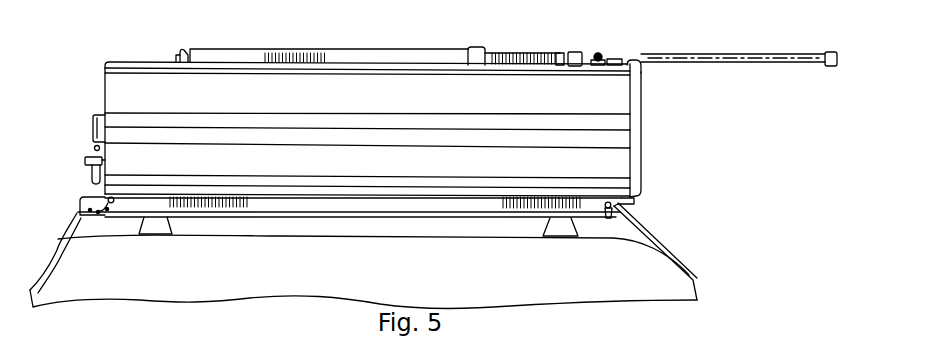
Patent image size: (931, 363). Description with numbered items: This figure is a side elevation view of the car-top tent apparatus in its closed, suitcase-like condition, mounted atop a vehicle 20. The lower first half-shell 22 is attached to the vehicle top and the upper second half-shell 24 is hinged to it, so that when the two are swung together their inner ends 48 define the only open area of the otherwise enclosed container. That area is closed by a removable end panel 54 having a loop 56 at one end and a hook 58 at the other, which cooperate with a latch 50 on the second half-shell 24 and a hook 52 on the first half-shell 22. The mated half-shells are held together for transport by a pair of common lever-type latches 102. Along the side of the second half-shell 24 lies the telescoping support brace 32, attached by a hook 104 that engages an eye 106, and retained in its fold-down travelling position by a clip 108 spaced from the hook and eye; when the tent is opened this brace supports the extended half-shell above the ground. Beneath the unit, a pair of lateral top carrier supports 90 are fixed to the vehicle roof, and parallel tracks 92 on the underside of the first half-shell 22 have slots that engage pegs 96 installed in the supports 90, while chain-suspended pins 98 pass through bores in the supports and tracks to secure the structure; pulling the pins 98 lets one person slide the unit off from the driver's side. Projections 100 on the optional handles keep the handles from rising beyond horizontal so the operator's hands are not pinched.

The vehicle 20 is at (698, 288).
The first half-shell 22 is at (655, 172).
The second half-shell 24 is at (92, 89).
The telescopic leg (telescoping support brace) 32 is at (308, 49).
The inner ends of the half-shells 48 is at (632, 139).
The latch 50 is at (606, 52).
The hook 52 is at (630, 207).
The end panel 54 is at (637, 101).
The loop 56 is at (627, 198).
The hook 58 is at (636, 60).
The lateral top carrier supports 90 is at (318, 213).
The tracks 92 is at (454, 201).
The pegs 96 is at (610, 213).
The pins 98 is at (113, 204).
The projections 100 is at (85, 161).
The lever-type latches 102 is at (93, 135).
The hook 104 is at (178, 56).
The eye 106 is at (186, 50).
The clip 108 is at (474, 46).